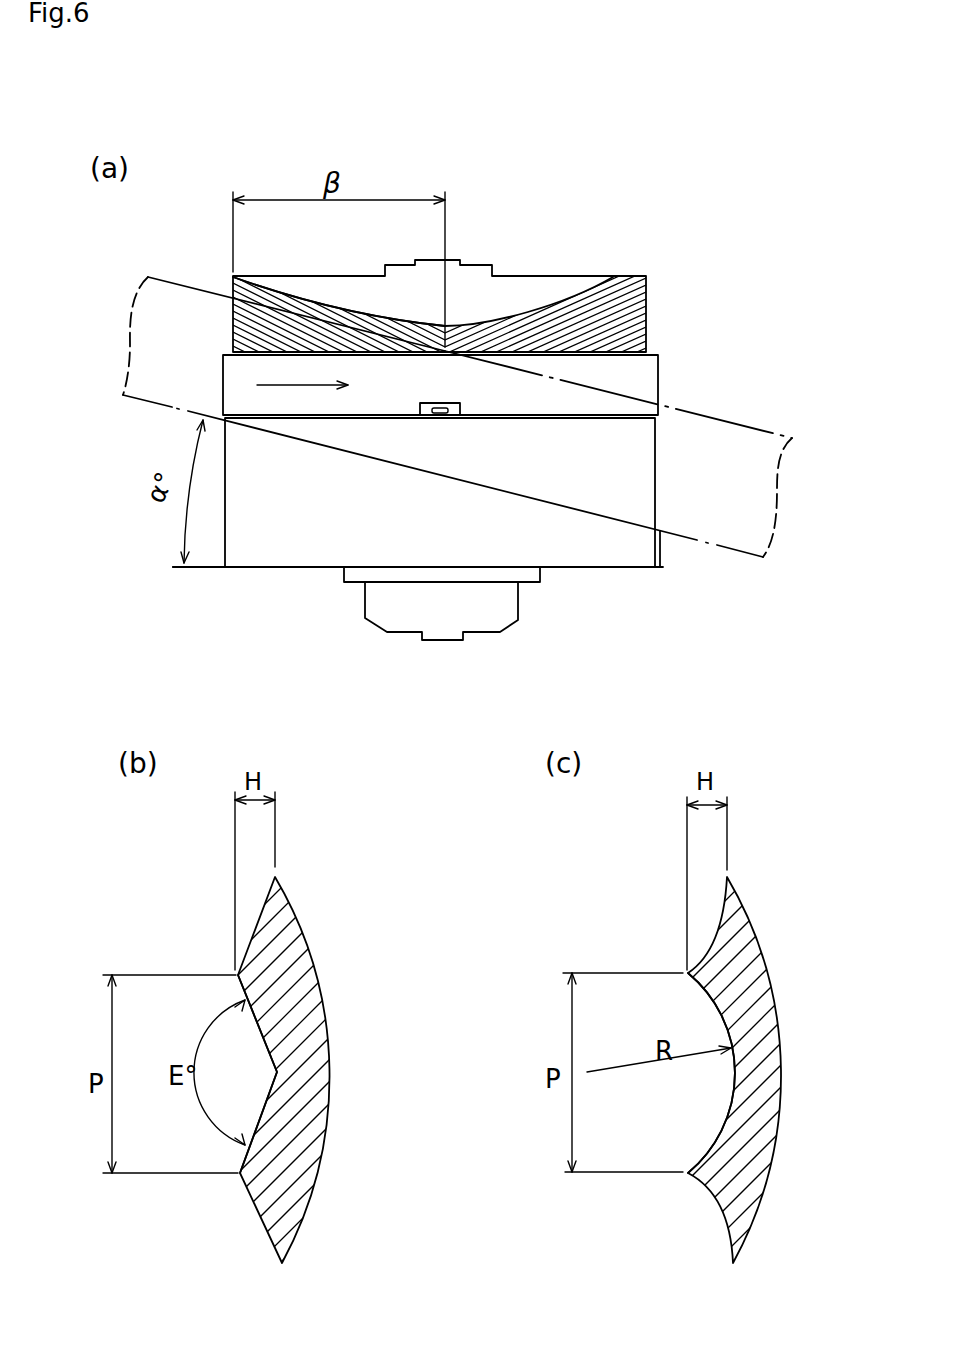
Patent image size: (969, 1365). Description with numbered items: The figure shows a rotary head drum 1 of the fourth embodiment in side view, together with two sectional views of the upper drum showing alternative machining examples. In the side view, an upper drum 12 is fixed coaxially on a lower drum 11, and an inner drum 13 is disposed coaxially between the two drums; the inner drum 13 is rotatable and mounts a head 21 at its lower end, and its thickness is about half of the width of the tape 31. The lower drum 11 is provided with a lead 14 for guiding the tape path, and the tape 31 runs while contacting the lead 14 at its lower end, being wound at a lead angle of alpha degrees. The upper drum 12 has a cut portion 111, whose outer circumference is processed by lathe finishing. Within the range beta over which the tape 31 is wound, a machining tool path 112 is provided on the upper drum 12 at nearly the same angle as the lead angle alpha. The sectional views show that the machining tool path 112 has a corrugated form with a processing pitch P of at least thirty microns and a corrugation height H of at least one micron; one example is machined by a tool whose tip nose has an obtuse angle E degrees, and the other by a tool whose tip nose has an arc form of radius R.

The rotary head drum 1 is at (218, 582).
The lower drum 11 is at (663, 567).
The upper drum 12 is at (633, 277).
The inner drum 13 is at (658, 357).
The lead 14 is at (557, 505).
The head 21 is at (433, 412).
The tape 31 is at (745, 426).
The cut portion 111 is at (518, 287).
The machining tool path 112 is at (245, 277).